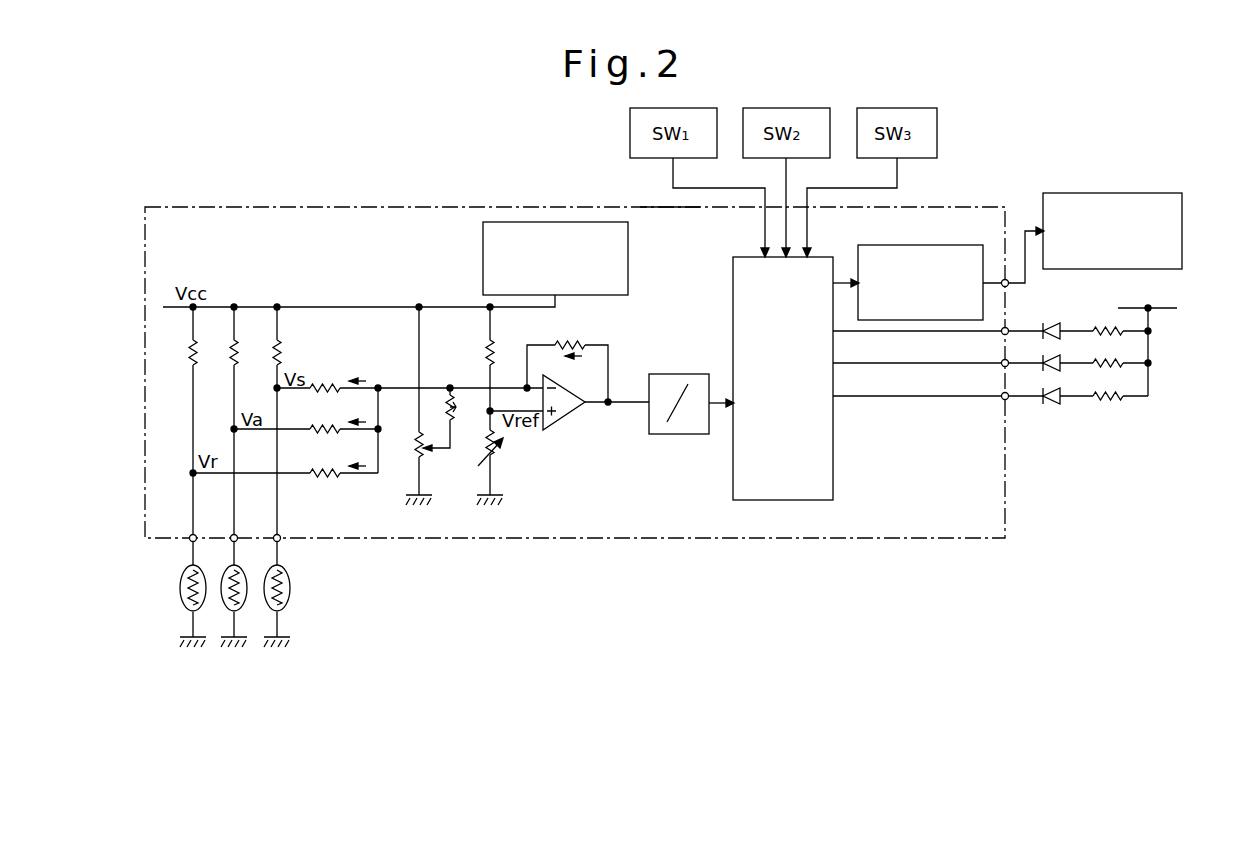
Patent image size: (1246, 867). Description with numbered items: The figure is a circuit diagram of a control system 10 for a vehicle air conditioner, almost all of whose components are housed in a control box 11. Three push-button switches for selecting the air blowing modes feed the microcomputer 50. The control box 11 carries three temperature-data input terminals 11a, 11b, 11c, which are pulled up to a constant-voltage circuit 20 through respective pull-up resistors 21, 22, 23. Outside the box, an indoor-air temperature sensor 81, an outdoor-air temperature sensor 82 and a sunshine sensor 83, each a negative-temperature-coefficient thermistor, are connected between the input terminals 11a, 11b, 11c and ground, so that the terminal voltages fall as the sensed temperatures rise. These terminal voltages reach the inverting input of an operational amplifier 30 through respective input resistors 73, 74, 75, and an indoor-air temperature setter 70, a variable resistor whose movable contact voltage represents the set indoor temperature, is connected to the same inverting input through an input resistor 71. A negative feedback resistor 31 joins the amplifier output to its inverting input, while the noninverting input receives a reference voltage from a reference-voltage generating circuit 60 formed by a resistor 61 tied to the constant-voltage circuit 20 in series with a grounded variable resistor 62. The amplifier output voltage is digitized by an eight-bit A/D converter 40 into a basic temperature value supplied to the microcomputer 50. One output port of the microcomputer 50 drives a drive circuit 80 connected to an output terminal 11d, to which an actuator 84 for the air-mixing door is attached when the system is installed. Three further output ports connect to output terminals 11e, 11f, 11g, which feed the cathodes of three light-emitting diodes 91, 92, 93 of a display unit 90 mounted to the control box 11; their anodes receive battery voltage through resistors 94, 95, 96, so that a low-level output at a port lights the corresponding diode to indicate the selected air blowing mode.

The control system 10 is at (561, 197).
The control box 11 is at (648, 206).
The temperature-data input terminal 11a is at (190, 535).
The temperature-data input terminal 11b is at (232, 535).
The temperature-data input terminal 11c is at (278, 535).
The output terminal 11d is at (1007, 280).
The output terminal 11e is at (1006, 329).
The output terminal 11f is at (1006, 361).
The output terminal 11g is at (1007, 400).
The constant-voltage circuit 20 is at (628, 248).
The pull-up resistor 21 is at (189, 354).
The pull-up resistor 22 is at (232, 354).
The pull-up resistor 23 is at (281, 357).
The operational amplifier 30 is at (567, 419).
The negative feedback resistor 31 is at (574, 344).
The A/D converter 40 is at (684, 374).
The microcomputer 50 is at (733, 297).
The reference-voltage generating circuit 60 is at (486, 335).
The resistor 61 is at (485, 348).
The variable resistor 62 is at (498, 453).
The indoor-air temperature setter 70 is at (415, 454).
The input resistor 71 is at (456, 417).
The input resistor 73 is at (330, 480).
The input resistor 74 is at (332, 435).
The input resistor 75 is at (331, 386).
The drive circuit 80 is at (953, 238).
The indoor-air temperature sensor 81 is at (180, 590).
The outdoor-air temperature sensor 82 is at (240, 595).
The sunshine sensor 83 is at (290, 590).
The actuator 84 is at (1121, 193).
The display unit 90 is at (1044, 317).
The light-emitting diode 91 is at (1053, 323).
The light-emitting diode 92 is at (1055, 359).
The light-emitting diode 93 is at (1055, 401).
The resistor 94 is at (1102, 327).
The resistor 95 is at (1106, 361).
The resistor 96 is at (1109, 401).